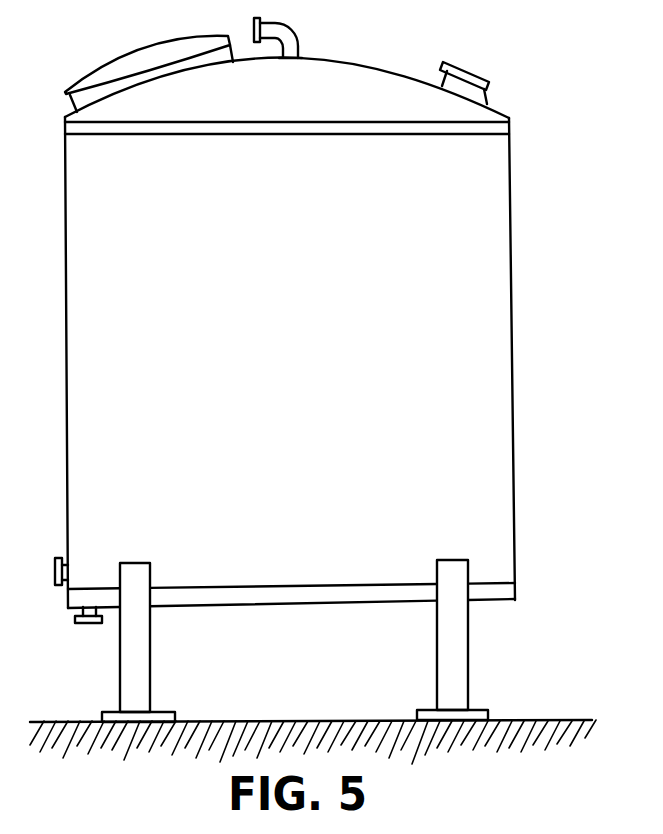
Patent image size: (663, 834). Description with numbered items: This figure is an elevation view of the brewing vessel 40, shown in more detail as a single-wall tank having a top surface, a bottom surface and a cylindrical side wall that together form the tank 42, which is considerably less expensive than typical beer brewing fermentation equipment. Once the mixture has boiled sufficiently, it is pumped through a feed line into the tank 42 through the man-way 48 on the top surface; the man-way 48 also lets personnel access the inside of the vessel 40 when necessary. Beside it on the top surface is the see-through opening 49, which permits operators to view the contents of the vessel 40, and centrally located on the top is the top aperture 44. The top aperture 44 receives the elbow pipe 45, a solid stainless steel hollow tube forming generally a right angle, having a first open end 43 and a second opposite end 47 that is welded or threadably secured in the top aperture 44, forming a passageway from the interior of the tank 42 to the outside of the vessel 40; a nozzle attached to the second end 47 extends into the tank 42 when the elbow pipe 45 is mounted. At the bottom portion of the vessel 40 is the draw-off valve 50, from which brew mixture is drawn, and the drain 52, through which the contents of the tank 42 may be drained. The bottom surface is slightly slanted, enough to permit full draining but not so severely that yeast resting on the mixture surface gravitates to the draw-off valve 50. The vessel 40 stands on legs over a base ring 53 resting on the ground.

The brewing vessel 40 is at (299, 384).
The tank 42 is at (270, 390).
The first open end 43 is at (254, 25).
The top aperture 44 is at (281, 53).
The elbow pipe 45 is at (282, 22).
The second opposite end 47 is at (299, 52).
The man-way 48 is at (99, 71).
The see-through opening 49 is at (493, 80).
The draw-off valve 50 is at (55, 572).
The drain 52 is at (85, 627).
The support ring 53 is at (497, 603).